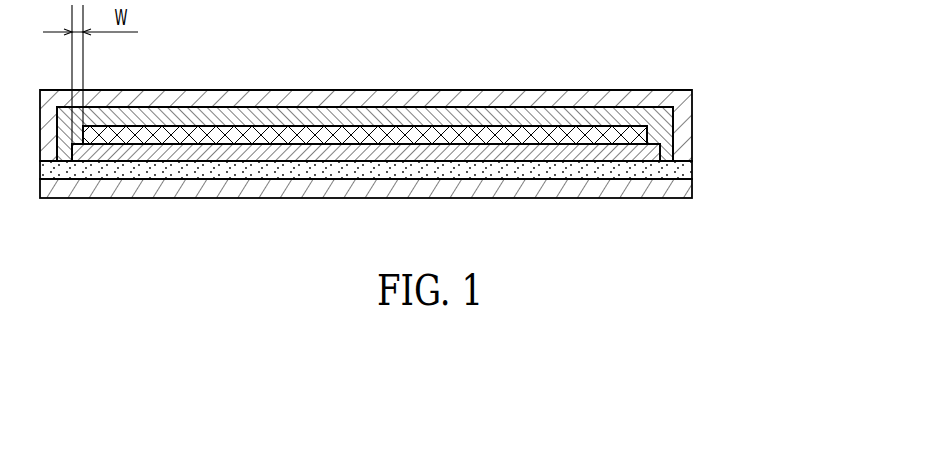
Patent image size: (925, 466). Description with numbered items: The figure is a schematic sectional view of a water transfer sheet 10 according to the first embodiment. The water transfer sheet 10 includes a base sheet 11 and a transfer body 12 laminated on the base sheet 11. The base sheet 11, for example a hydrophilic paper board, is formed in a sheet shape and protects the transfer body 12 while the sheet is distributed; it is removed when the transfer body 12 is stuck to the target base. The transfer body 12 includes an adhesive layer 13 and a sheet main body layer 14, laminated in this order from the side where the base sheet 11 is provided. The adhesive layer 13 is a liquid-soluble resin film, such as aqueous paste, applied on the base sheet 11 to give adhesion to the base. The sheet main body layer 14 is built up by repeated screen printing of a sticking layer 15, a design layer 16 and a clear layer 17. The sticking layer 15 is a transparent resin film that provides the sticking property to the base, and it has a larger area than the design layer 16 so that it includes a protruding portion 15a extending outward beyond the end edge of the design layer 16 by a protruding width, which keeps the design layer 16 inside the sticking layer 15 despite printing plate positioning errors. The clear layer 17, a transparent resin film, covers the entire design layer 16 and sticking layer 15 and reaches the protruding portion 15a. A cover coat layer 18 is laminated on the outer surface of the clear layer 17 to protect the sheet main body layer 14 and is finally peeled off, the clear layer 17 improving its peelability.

The water transfer sheet 10 is at (466, 152).
The base sheet 11 is at (676, 190).
The transfer body 12 is at (442, 152).
The adhesive layer 13 is at (417, 189).
The sheet main body layer 14 is at (426, 174).
The sticking layer 15 is at (685, 150).
The protruding portion 15a is at (85, 163).
The design layer 16 is at (672, 137).
The clear layer 17 is at (688, 103).
The cover coat layer 18 is at (657, 91).